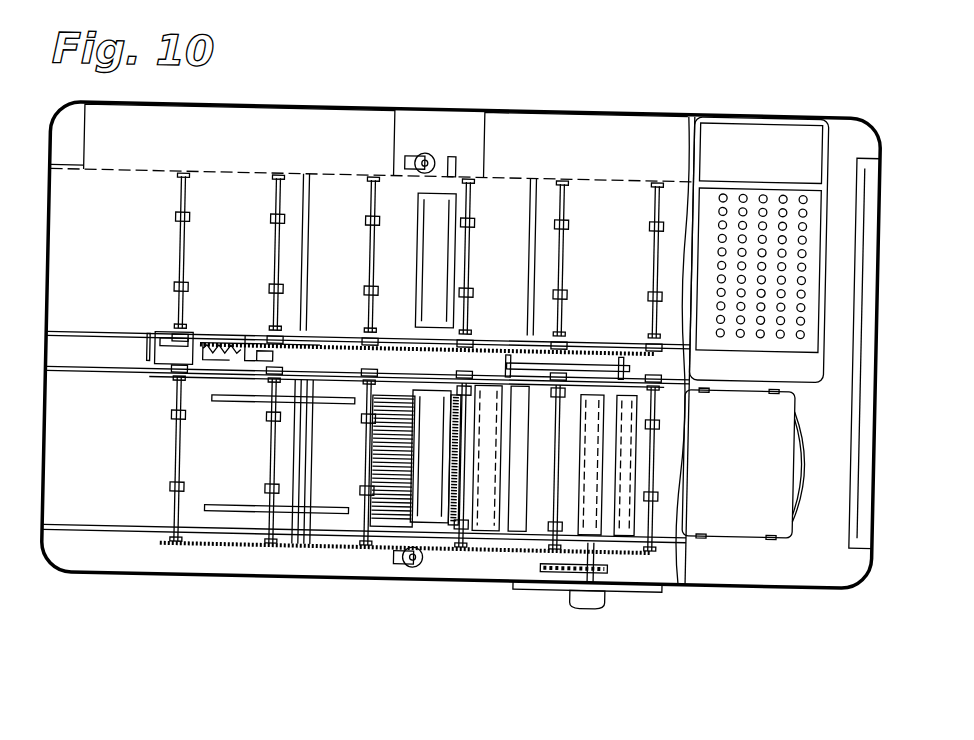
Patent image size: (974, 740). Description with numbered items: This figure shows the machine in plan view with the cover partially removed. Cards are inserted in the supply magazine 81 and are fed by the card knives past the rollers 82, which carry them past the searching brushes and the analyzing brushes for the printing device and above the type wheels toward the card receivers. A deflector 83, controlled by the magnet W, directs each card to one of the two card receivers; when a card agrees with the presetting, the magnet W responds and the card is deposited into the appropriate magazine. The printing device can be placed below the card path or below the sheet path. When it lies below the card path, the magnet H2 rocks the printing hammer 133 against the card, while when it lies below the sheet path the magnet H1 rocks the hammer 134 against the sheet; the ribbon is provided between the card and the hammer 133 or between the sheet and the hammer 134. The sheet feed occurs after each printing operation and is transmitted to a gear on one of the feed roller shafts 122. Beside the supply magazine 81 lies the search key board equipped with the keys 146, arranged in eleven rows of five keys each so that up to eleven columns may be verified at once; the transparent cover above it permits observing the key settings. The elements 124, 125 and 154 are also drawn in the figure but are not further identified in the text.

The magnet W is at (168, 362).
The guide rod with bushings 124 is at (188, 292).
The feed roller shafts 122 is at (366, 248).
The hammer 134 is at (434, 265).
The rack 125 is at (246, 357).
The rollers 82 is at (268, 486).
The deflector 83 is at (300, 512).
The printing hammer 133 is at (434, 505).
The magnet H1 is at (427, 158).
The magnet H2 is at (410, 567).
The magazine 81 is at (748, 536).
The keys 146 is at (806, 292).
The side strip 154 is at (864, 208).